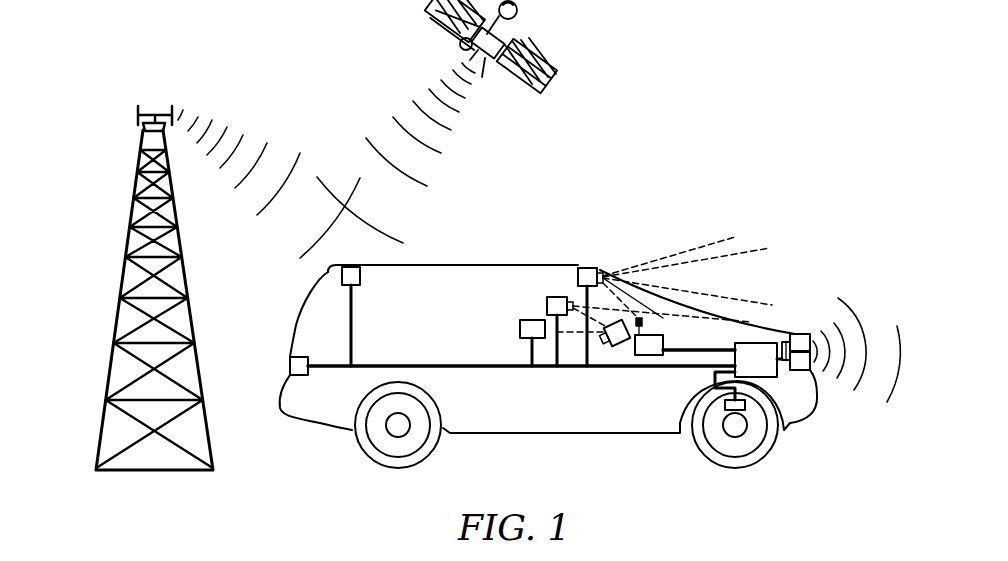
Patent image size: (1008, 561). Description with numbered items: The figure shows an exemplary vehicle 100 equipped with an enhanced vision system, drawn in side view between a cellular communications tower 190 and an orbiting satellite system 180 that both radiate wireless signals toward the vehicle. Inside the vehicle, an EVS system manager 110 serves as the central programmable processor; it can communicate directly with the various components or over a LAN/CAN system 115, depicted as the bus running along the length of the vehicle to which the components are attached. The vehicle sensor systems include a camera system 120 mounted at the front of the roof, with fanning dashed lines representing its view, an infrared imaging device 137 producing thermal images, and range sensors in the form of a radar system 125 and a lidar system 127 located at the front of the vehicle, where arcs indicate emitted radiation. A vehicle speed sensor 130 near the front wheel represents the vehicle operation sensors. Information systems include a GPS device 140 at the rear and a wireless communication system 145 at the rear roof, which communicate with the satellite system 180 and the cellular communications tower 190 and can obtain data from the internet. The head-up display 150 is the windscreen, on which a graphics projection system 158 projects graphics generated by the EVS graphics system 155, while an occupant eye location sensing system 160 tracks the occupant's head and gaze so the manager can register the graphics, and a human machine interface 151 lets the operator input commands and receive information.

The vehicle 100 is at (514, 265).
The EVS system manager 110 is at (777, 372).
The LAN/CAN system 115 is at (385, 365).
The camera system 120 is at (594, 268).
The radar system 125 is at (812, 357).
The lidar system 127 is at (801, 334).
The vehicle speed sensor 130 is at (745, 406).
The infrared (IR) imaging device 137 is at (553, 298).
The GPS device 140 is at (290, 368).
The wireless communication system 145 is at (342, 273).
The head-up display (HUD) 150 is at (660, 318).
The human machine interface (HMI) 151 is at (520, 325).
The EVS graphics system 155 is at (652, 355).
The graphics projection system 158 is at (640, 320).
The occupant eye location sensing system 160 is at (617, 345).
The satellite system 180 is at (460, 44).
The cellular communications tower 190 is at (143, 257).